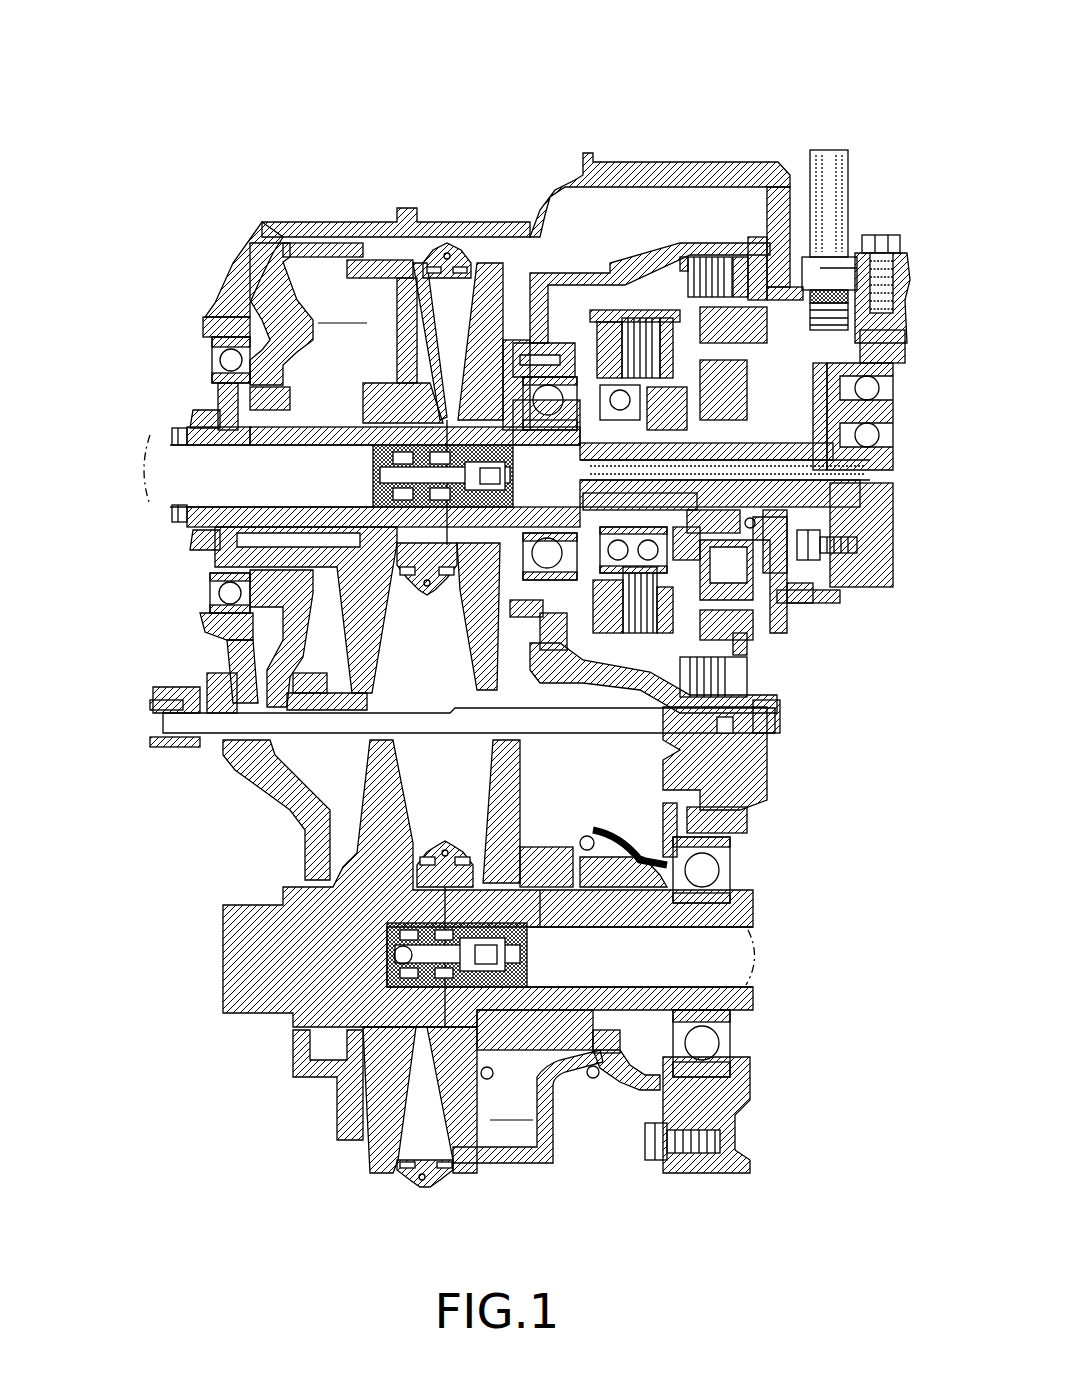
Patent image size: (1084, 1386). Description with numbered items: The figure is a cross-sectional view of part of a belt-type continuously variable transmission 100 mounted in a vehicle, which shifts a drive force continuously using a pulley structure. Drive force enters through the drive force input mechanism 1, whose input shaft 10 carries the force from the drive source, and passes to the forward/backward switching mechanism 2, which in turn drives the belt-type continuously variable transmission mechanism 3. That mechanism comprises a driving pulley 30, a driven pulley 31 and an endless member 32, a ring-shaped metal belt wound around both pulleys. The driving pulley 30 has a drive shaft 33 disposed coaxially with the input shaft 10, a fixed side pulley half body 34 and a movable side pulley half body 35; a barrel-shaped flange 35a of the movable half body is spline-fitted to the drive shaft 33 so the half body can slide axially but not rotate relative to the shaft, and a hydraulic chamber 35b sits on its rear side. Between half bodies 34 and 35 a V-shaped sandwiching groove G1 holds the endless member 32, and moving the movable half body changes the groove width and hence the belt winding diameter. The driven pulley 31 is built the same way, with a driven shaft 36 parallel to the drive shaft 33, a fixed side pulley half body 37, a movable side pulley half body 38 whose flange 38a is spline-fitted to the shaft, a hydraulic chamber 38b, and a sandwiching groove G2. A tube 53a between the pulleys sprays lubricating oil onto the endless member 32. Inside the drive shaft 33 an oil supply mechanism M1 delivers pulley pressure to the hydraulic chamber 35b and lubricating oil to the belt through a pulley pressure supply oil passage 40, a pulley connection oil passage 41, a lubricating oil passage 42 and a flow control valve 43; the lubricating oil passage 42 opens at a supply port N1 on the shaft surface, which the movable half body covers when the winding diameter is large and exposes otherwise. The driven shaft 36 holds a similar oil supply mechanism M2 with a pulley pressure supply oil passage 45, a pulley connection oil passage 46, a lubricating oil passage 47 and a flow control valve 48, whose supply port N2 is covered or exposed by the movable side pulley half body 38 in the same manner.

The continuously variable transmission 100 is at (820, 85).
The drive force input mechanism 1 is at (895, 215).
The forward/backward switching mechanism 2 is at (672, 208).
The belt-type continuously variable transmission mechanism 3 is at (297, 188).
The input shaft 10 is at (785, 470).
The driving pulley 30 is at (515, 248).
The driven pulley 31 is at (343, 1150).
The endless member 32 is at (427, 598).
The drive shaft 33 is at (222, 398).
The fixed side pulley half body 34 is at (485, 262).
The movable side pulley half body 35 is at (377, 257).
The flange 35a is at (210, 342).
The hydraulic chamber 35b is at (342, 309).
The driven shaft 36 is at (667, 1172).
The fixed side pulley half body 37 is at (373, 1173).
The movable side pulley half body 38 is at (483, 1167).
The flange 38a is at (620, 1040).
The hydraulic chamber 38b is at (511, 1106).
The pulley pressure supply oil passage 40 is at (232, 503).
The pulley connection oil passage 41 is at (172, 437).
The lubricating oil passage 42 is at (298, 447).
The flow control valve 43 is at (370, 476).
The pulley pressure supply oil passage 45 is at (693, 983).
The pulley connection oil passage 46 is at (575, 927).
The lubricating oil passage 47 is at (550, 993).
The flow control valve 48 is at (530, 950).
The tube 53a is at (323, 740).
The sandwiching groove G1 is at (447, 330).
The sandwiching groove G2 is at (423, 1087).
The oil supply mechanism M1 is at (146, 478).
The oil supply mechanism M2 is at (778, 950).
The supply port N1 is at (390, 373).
The supply port N2 is at (380, 1015).